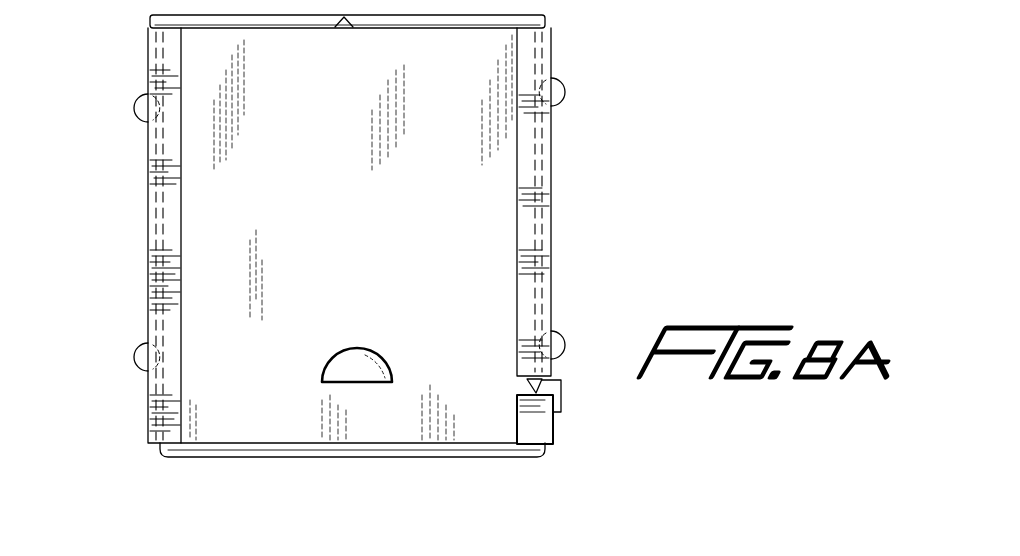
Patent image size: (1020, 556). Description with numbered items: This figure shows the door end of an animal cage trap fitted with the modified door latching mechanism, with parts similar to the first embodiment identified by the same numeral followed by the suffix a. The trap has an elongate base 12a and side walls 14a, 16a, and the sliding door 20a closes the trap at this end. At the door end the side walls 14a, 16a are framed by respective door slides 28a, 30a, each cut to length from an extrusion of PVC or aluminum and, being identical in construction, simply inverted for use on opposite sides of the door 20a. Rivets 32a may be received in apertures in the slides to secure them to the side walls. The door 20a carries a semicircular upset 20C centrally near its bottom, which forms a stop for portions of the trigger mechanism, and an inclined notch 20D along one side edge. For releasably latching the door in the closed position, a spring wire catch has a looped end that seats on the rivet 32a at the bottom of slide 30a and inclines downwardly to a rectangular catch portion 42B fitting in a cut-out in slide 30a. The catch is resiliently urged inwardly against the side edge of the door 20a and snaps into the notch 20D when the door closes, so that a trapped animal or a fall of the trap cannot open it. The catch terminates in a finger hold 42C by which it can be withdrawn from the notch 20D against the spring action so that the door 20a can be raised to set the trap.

The base 12a is at (218, 461).
The side wall 14a is at (148, 176).
The side wall 16a is at (541, 202).
The sliding door 20a is at (208, 262).
The semicircular upset 20C is at (348, 357).
The inclined notch 20D is at (530, 385).
The door slide 28a is at (176, 284).
The door slide 30a is at (519, 266).
The rivet 32a is at (142, 104).
The rectangular catch portion 42B is at (556, 381).
The finger hold 42C is at (561, 412).